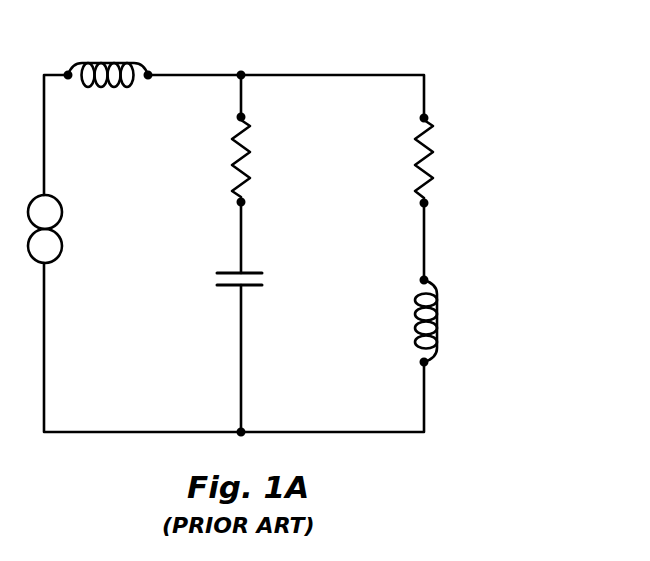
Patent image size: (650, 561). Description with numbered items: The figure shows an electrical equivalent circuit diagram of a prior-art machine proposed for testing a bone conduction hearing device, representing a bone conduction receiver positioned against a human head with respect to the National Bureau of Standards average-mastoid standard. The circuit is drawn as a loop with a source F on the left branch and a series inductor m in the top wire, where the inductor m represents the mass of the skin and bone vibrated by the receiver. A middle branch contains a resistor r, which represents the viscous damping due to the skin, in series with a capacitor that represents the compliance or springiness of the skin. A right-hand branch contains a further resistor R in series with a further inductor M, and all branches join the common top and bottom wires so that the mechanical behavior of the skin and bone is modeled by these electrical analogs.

The inductor m is at (117, 62).
The source (force) F is at (62, 218).
The resistor r is at (249, 162).
The resistor R is at (433, 165).
The inductor M is at (440, 320).